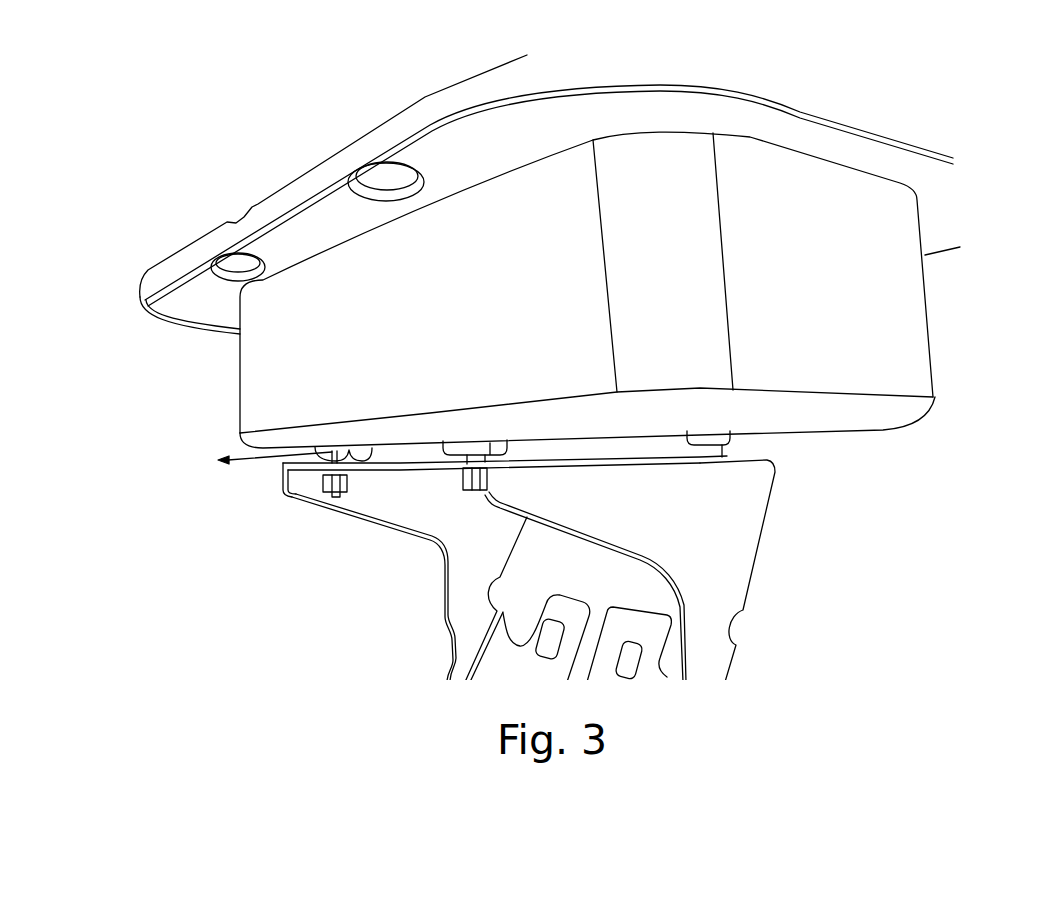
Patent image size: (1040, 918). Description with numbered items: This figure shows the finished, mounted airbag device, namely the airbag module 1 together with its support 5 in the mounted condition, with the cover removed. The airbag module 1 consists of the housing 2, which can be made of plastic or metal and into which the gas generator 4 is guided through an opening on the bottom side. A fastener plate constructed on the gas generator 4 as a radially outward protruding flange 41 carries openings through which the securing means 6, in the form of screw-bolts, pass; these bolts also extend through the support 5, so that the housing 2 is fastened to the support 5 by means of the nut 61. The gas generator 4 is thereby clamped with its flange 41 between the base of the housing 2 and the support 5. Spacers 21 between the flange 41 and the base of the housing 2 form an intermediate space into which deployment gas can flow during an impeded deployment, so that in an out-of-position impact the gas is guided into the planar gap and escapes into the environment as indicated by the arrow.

The airbag module 1 is at (222, 346).
The housing 2 is at (905, 345).
The gas generator 4 is at (477, 557).
The flange 41 is at (328, 463).
The support 5 is at (723, 530).
The securing means 6 is at (310, 488).
The nut 61 is at (320, 484).
The spacers 21 is at (477, 492).